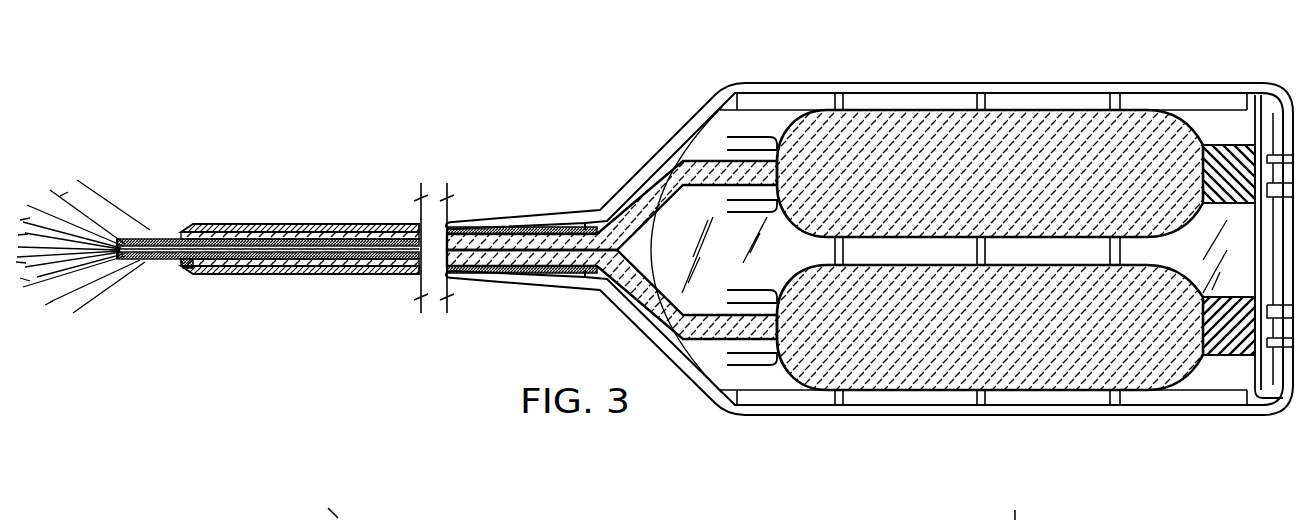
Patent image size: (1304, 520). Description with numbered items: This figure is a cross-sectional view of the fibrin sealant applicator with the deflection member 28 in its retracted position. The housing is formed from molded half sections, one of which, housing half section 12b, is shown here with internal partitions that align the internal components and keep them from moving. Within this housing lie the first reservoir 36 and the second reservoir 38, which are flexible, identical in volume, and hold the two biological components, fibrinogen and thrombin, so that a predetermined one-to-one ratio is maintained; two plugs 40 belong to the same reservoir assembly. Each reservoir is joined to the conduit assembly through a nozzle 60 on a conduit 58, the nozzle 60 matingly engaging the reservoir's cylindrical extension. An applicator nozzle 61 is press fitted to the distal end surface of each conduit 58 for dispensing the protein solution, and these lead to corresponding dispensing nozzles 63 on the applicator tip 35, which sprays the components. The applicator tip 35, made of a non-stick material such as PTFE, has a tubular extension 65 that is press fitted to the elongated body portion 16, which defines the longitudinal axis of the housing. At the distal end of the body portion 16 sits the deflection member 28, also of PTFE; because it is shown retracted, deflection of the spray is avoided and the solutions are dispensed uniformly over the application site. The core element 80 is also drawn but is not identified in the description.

The housing half section 12b is at (862, 416).
The elongated body portion 16 is at (288, 274).
The deflection member 28 is at (202, 269).
The applicator tip 35 is at (190, 223).
The first reservoir 36 is at (1142, 391).
The second reservoir 38 is at (1180, 118).
The plug 40 is at (1227, 143).
The conduit 58 is at (410, 273).
The nozzle 60 is at (722, 337).
The applicator nozzle 61 is at (386, 223).
The dispensing nozzle 63 is at (147, 230).
The tubular extension 65 is at (242, 274).
The core wire 80 is at (332, 243).